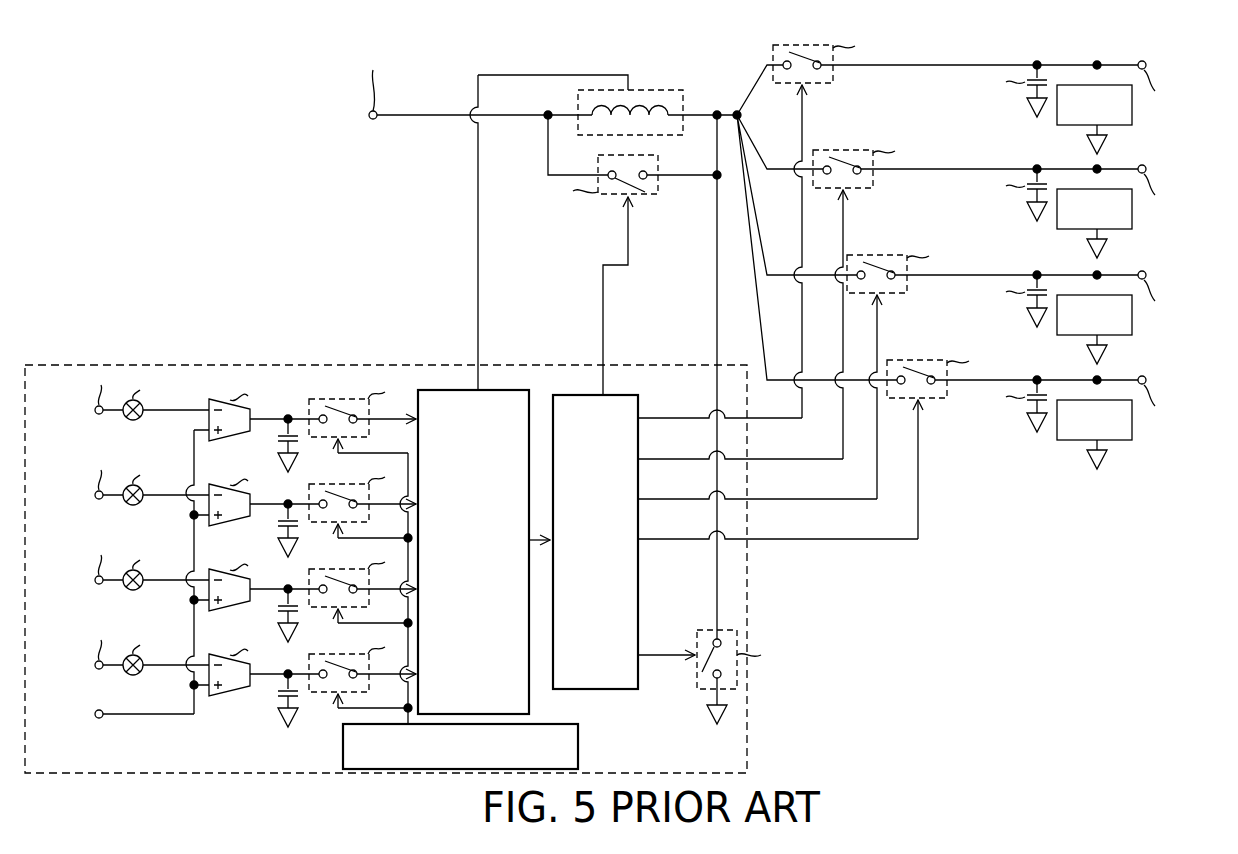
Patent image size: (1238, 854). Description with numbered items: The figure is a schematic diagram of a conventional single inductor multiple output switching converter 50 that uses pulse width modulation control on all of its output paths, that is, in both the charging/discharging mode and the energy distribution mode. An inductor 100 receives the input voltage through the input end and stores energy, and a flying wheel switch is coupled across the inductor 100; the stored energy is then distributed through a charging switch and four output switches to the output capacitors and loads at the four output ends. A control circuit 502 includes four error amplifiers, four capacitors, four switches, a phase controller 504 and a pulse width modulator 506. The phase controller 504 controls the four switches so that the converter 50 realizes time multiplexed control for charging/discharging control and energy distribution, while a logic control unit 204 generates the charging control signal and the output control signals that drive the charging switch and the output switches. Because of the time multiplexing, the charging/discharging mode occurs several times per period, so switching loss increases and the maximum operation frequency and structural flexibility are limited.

The SIMO switching converter 50 is at (147, 167).
The inductor 100 is at (652, 90).
The control circuit 502 is at (346, 365).
The phase controller 504 is at (578, 745).
The pulse width modulator 506 is at (508, 390).
The logic control unit 204 is at (617, 395).